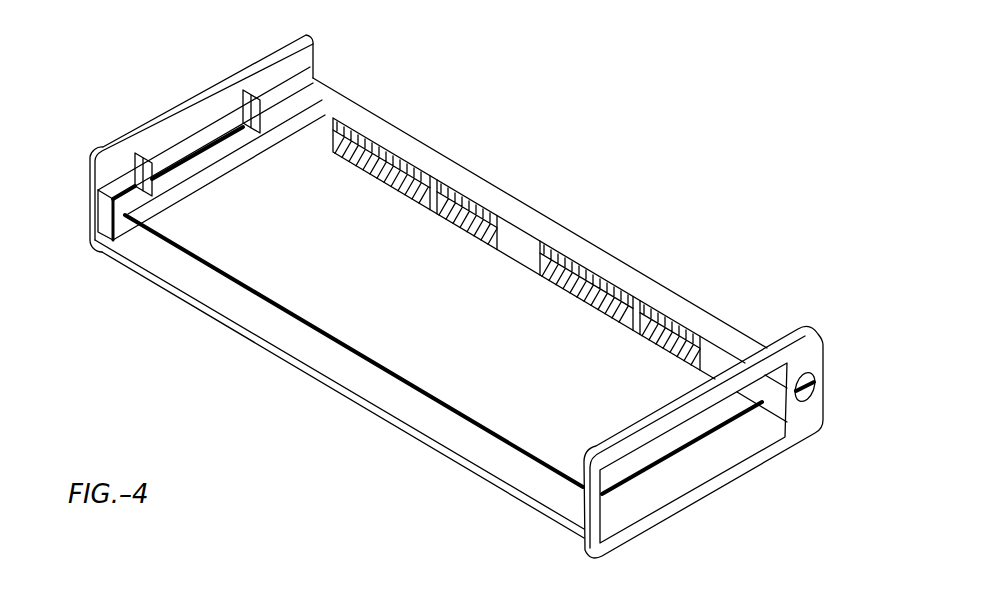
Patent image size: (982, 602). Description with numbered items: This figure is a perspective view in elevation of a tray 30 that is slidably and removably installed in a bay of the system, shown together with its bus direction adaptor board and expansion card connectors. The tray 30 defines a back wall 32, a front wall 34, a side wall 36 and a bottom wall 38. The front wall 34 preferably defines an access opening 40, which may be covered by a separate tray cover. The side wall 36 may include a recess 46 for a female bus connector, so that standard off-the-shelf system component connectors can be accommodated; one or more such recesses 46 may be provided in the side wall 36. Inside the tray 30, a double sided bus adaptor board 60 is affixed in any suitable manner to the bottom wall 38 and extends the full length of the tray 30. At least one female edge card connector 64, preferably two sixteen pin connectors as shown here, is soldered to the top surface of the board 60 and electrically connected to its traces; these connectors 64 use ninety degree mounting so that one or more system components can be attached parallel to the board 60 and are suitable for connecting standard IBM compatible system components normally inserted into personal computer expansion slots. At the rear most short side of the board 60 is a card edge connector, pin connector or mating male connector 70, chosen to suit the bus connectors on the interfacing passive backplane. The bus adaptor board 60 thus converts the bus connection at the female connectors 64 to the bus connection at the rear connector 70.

The tray 30 is at (692, 243).
The back wall 32 is at (121, 162).
The front wall 34 is at (803, 428).
The side wall 36 is at (333, 100).
The bottom wall 38 is at (475, 472).
The access opening 40 is at (727, 453).
The recess 46 is at (343, 110).
The bus adaptor board 60 is at (267, 272).
The female edge card connector 64 is at (440, 180).
The mating male connector 70 is at (192, 130).